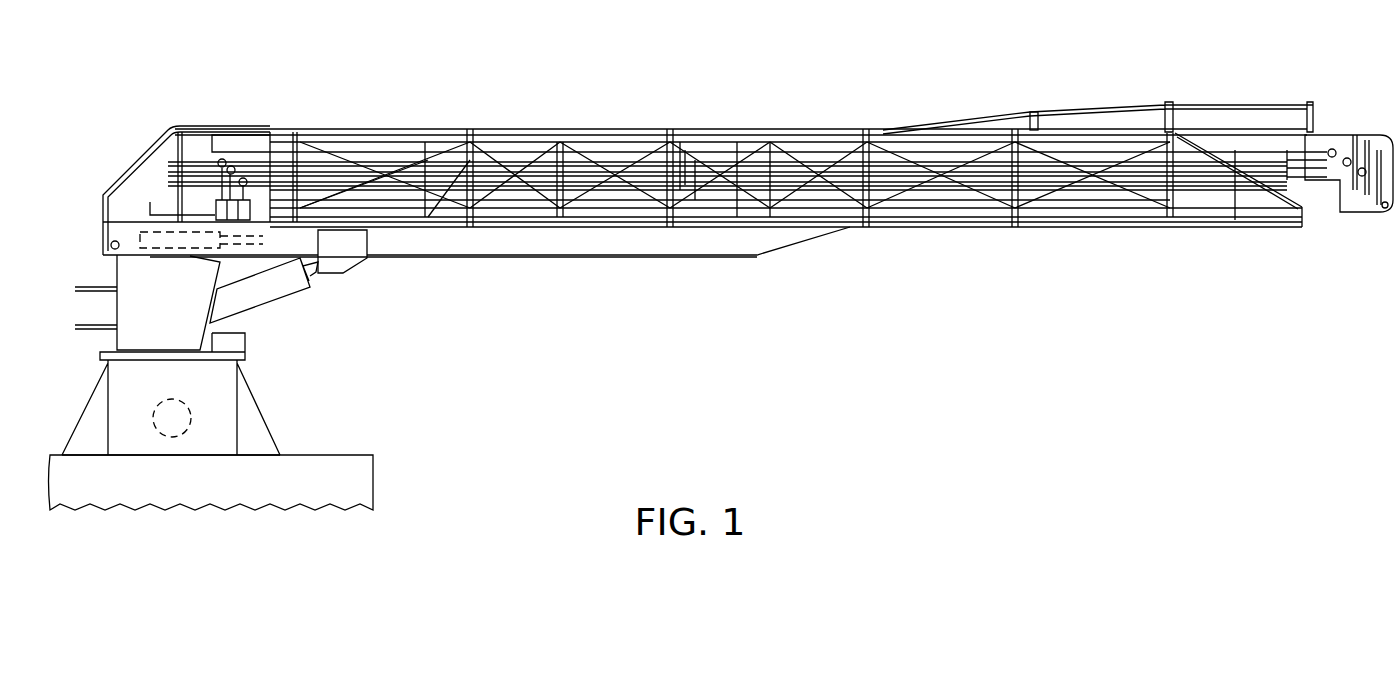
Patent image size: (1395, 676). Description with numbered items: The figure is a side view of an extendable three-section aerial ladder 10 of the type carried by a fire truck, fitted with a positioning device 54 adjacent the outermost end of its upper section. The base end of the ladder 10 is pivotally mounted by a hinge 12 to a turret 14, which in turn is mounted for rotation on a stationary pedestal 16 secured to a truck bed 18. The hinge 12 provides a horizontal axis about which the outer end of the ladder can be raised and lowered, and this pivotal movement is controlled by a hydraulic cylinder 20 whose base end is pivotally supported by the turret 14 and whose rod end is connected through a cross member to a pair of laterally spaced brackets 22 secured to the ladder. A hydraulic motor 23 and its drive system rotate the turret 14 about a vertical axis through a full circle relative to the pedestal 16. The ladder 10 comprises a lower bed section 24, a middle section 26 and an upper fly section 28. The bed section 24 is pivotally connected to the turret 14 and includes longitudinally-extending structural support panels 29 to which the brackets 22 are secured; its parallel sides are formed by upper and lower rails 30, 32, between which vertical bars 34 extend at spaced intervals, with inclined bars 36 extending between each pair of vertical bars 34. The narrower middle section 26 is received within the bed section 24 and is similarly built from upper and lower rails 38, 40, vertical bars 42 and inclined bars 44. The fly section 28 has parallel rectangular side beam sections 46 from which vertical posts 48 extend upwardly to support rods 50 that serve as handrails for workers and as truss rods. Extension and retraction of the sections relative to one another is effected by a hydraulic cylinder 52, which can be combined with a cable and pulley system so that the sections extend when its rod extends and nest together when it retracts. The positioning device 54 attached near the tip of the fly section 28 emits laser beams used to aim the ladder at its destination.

The aerial ladder 10 is at (721, 265).
The hinge 12 is at (103, 238).
The turret 14 is at (117, 270).
The pedestal 16 is at (222, 398).
The truck bed 18 is at (373, 480).
The hydraulic cylinder 20 is at (287, 290).
The brackets 22 is at (352, 262).
The hydraulic motor 23 is at (173, 438).
The bed section 24 is at (962, 230).
The middle section 26 is at (1137, 195).
The fly section 28 is at (1270, 150).
The structural support panels 29 is at (625, 258).
The upper rails 30 is at (540, 126).
The lower rails 32 is at (541, 222).
The vertical bars 34 is at (478, 140).
The inclined bars 36 is at (623, 140).
The upper rails 38 is at (310, 140).
The lower rails 40 is at (990, 185).
The vertical bars 42 is at (420, 210).
The inclined bars 44 is at (450, 205).
The side beam sections 46 is at (1213, 195).
The vertical posts 48 is at (1165, 115).
The rods 50 is at (1195, 105).
The hydraulic cylinder 52 is at (165, 250).
The positioning device 54 is at (1357, 140).